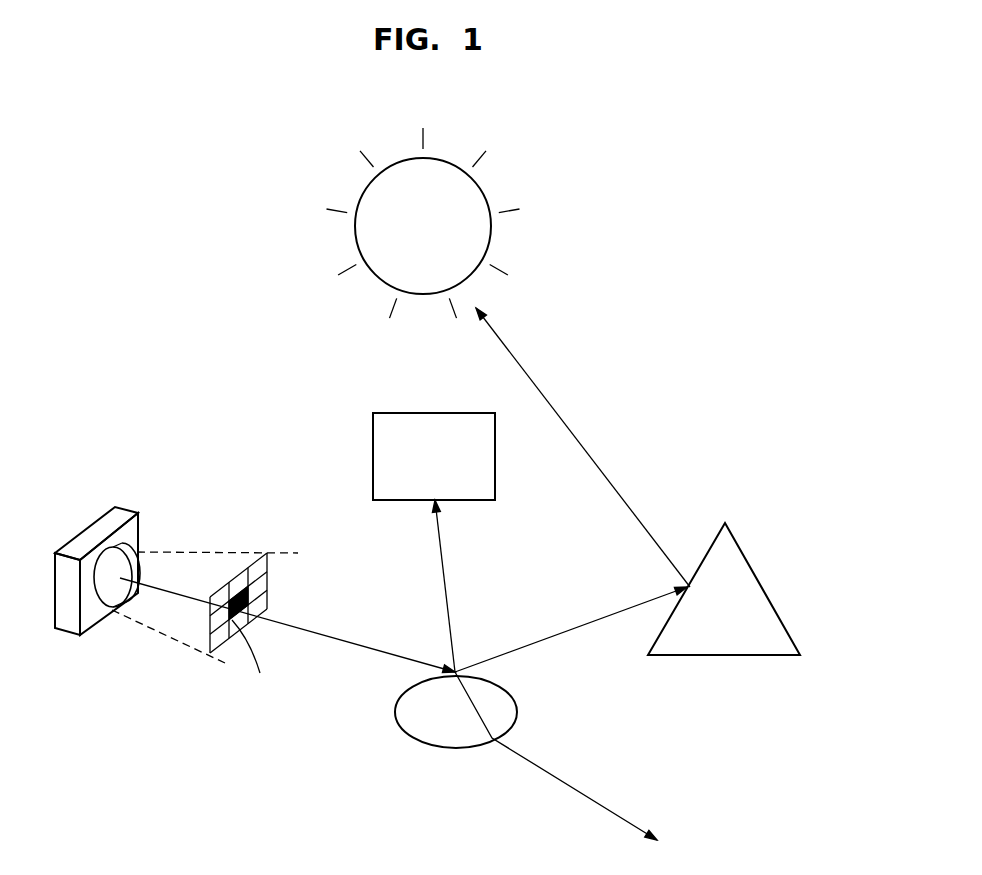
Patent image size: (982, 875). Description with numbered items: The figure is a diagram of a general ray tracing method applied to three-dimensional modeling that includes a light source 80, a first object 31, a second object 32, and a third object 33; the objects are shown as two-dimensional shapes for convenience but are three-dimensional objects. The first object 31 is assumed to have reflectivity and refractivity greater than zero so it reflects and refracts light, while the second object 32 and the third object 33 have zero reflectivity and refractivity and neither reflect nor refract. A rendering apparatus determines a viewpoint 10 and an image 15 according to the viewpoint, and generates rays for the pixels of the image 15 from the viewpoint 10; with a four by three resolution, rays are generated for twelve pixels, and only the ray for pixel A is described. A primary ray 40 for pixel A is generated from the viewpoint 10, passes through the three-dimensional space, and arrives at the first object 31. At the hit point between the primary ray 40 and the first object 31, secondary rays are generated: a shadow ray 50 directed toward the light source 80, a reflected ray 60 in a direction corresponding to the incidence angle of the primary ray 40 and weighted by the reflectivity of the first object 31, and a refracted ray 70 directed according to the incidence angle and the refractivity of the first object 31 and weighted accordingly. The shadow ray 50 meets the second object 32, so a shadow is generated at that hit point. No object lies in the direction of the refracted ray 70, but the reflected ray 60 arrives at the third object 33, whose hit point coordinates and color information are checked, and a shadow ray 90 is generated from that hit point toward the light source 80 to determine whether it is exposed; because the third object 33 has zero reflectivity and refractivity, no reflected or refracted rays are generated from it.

The viewpoint 10 is at (123, 517).
The image 15 is at (240, 573).
The first object 31 is at (456, 712).
The second object 32 is at (434, 456).
The third object 33 is at (724, 589).
The primary ray 40 is at (327, 633).
The shadow ray 50 is at (447, 593).
The reflected ray 60 is at (557, 636).
The refracted ray 70 is at (572, 792).
The light source 80 is at (423, 223).
The shadow ray 90 is at (580, 448).